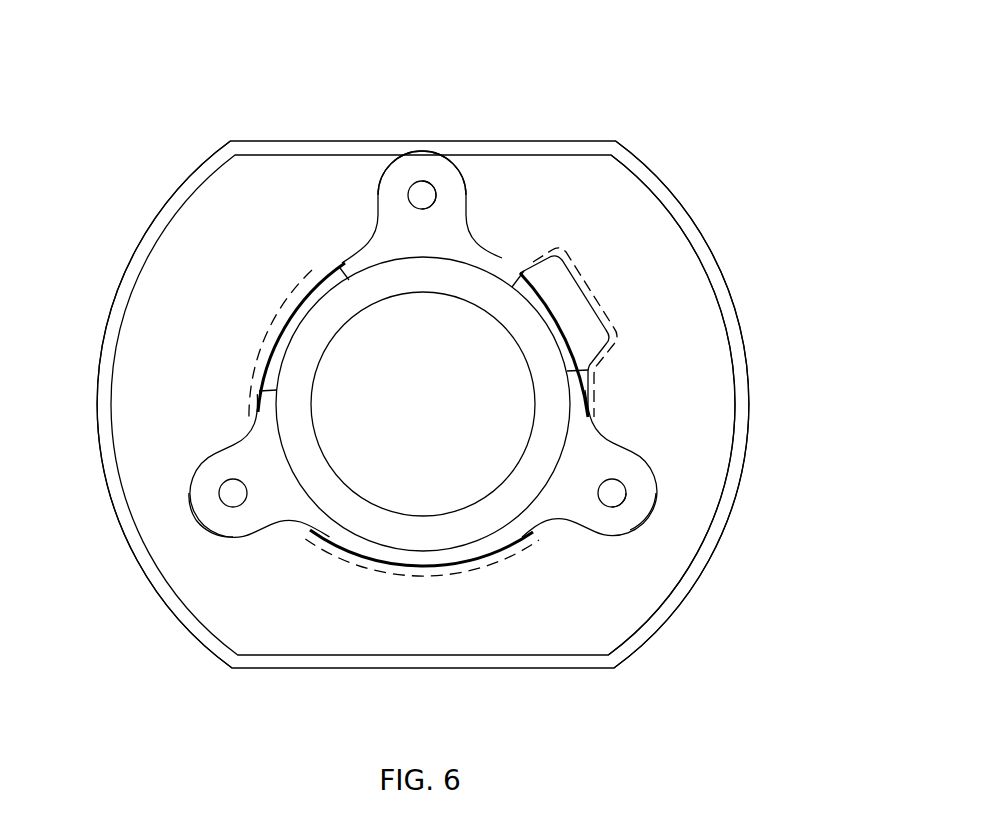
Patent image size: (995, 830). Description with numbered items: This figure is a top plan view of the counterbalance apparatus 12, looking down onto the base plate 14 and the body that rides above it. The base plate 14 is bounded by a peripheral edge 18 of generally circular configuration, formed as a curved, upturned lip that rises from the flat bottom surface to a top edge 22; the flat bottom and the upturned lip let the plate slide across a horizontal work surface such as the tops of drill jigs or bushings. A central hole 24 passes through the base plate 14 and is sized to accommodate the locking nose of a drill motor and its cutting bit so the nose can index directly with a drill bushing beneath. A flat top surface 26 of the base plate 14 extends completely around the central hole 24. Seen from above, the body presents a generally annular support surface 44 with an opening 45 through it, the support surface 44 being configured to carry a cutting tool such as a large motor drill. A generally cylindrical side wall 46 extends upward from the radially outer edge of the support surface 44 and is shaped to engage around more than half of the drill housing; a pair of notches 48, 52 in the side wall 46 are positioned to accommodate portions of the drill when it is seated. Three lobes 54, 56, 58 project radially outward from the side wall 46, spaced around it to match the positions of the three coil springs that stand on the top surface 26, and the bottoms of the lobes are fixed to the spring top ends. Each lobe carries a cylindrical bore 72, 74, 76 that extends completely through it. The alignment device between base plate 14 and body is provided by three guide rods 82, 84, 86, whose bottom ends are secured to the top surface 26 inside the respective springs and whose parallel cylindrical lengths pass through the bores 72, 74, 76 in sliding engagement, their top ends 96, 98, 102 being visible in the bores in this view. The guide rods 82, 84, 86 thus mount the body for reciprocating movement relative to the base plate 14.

The counterbalance apparatus 12 is at (607, 55).
The base plate 14 is at (673, 186).
The peripheral edge 18 is at (733, 296).
The top edge 22 is at (740, 352).
The central hole 24 is at (391, 486).
The top surface 26 is at (137, 346).
The support surface 44 is at (316, 330).
The opening 45 is at (348, 455).
The side wall 46 is at (443, 565).
The notch 48 is at (553, 299).
The notch 52 is at (271, 327).
The lobe 54 is at (650, 522).
The lobe 56 is at (422, 181).
The lobe 58 is at (193, 521).
The cylindrical bore 72 is at (618, 507).
The cylindrical bore 74 is at (435, 190).
The cylindrical bore 76 is at (228, 546).
The guide rod 82 is at (627, 494).
The guide rod 84 is at (403, 156).
The guide rod 86 is at (222, 493).
The top end 96 is at (620, 487).
The top end 98 is at (425, 198).
The top end 102 is at (228, 486).